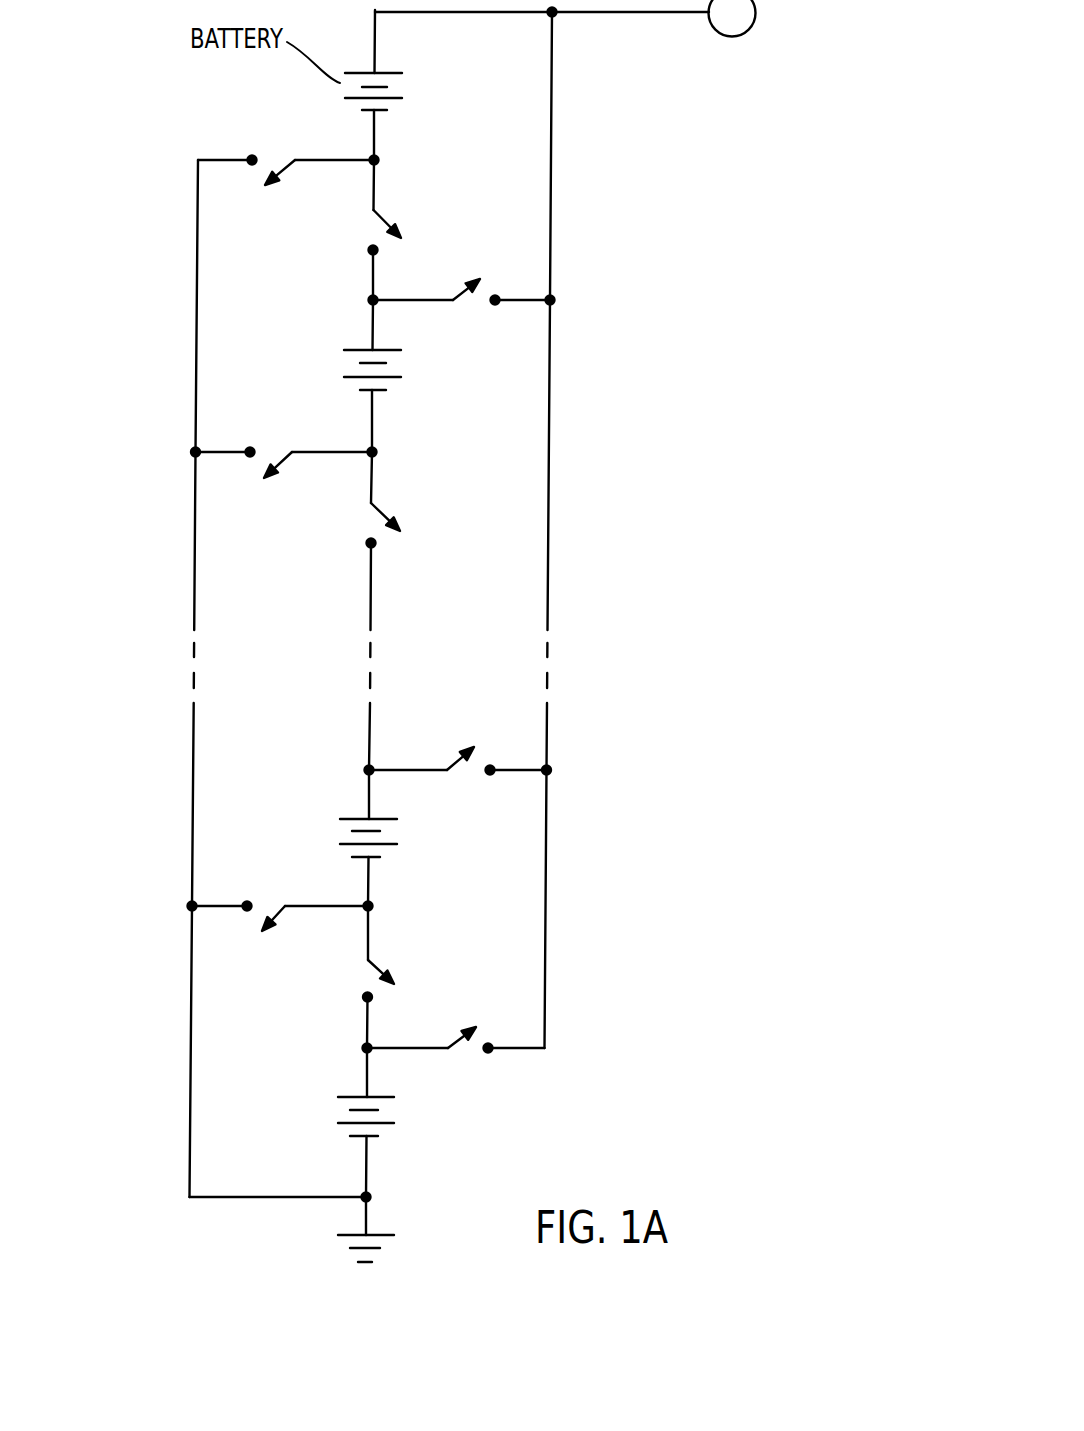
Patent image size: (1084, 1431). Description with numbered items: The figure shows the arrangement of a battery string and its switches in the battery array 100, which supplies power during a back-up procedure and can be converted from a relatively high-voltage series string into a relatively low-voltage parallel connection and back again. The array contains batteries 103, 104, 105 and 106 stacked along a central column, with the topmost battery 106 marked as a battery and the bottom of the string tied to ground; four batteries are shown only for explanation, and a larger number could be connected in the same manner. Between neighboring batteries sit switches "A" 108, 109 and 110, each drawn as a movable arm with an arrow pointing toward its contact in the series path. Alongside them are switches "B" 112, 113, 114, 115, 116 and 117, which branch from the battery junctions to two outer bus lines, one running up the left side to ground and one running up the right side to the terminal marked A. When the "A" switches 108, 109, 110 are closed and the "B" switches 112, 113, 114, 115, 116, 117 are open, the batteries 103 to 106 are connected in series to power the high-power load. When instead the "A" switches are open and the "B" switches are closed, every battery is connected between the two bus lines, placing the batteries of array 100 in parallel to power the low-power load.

The battery array 100 is at (149, 495).
The battery 103 is at (337, 1111).
The battery 104 is at (391, 852).
The battery 105 is at (400, 386).
The battery 106 is at (405, 85).
The switch "A" 108 is at (353, 998).
The switch "A" 109 is at (403, 530).
The switch "A" 110 is at (363, 249).
The switch "B" 112 is at (480, 1058).
The switch "B" 113 is at (255, 897).
The switch "B" 114 is at (448, 763).
The switch "B" 115 is at (249, 462).
The switch "B" 116 is at (495, 292).
The switch "B" 117 is at (257, 150).